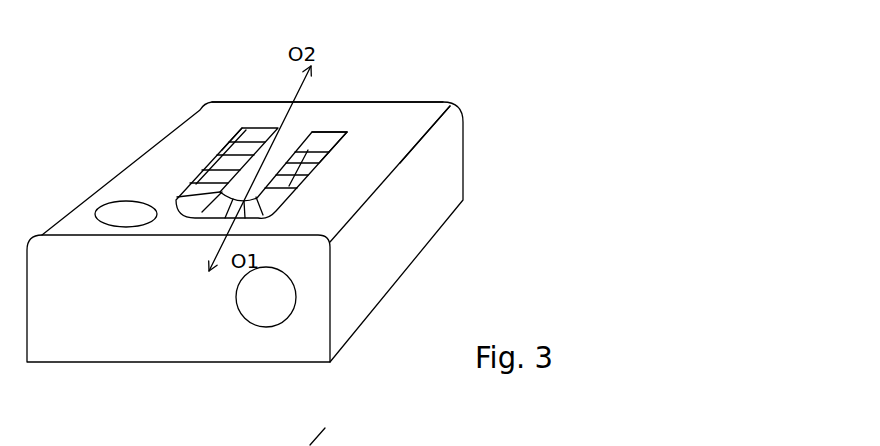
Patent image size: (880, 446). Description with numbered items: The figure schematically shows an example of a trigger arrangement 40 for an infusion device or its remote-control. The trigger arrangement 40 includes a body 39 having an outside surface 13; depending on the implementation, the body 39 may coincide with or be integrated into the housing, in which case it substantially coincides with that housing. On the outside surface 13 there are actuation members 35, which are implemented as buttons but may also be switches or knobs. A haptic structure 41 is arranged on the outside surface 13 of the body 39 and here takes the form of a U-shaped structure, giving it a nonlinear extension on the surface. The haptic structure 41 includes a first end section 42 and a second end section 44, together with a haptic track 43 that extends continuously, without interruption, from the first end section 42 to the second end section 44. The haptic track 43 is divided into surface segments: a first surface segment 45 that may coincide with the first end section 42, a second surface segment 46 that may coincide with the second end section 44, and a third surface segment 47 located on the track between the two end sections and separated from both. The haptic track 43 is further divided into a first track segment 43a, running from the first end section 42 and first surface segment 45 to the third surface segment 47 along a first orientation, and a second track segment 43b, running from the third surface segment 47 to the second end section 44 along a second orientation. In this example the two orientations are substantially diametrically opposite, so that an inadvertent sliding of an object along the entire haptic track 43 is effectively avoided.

The outside surface 13 is at (397, 108).
The actuation member 35 is at (113, 215).
The body 39 is at (172, 336).
The trigger arrangement 40 is at (260, 93).
The haptic structure 41 is at (238, 116).
The first end section 42 is at (364, 131).
The haptic track 43 is at (333, 116).
The first track segment 43a is at (323, 183).
The second track segment 43b is at (180, 160).
The second end section 44 is at (208, 135).
The first surface segment 45 is at (353, 138).
The second surface segment 46 is at (225, 132).
The third surface segment 47 is at (220, 212).